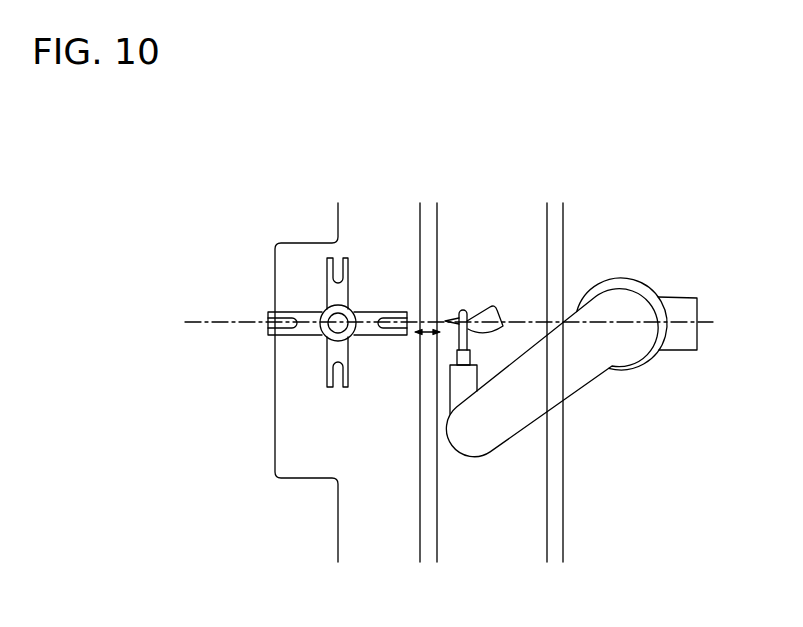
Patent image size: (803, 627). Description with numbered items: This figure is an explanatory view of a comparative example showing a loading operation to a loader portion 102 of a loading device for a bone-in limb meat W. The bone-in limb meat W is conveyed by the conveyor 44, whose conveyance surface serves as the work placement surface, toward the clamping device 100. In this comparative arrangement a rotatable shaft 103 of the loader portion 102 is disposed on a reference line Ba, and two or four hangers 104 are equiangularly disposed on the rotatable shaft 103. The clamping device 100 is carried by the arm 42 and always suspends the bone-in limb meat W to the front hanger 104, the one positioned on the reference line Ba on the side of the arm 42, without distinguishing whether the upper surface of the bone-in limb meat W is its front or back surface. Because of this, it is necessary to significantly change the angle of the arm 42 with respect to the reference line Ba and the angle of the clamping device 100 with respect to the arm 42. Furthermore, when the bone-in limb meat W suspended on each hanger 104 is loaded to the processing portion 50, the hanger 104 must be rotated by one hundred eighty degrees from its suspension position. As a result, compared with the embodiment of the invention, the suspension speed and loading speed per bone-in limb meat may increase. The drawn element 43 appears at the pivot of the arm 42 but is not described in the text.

The processing portion 50 is at (340, 222).
The loader portion 102 is at (303, 318).
The rotatable shaft 103 is at (330, 330).
The hanger 104 is at (348, 265).
The clamping device 100 is at (455, 386).
The bone-in limb meat W is at (495, 307).
The reference line Ba is at (533, 316).
The arm 42 is at (577, 377).
The pivot boss 43 is at (615, 284).
The conveyor 44 is at (508, 503).